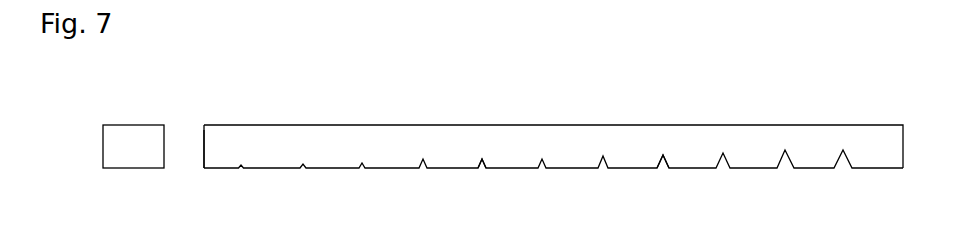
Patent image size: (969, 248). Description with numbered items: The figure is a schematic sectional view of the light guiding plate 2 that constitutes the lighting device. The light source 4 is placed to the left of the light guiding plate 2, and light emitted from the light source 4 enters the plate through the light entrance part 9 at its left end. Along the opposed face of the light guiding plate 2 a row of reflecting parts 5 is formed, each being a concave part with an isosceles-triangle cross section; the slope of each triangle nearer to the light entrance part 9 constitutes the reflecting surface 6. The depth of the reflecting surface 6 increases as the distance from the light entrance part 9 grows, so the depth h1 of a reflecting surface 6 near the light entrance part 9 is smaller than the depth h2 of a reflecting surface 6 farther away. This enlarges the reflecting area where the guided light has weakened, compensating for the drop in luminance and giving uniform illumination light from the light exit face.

The light guiding plate 2 is at (320, 126).
The light source 4 is at (124, 168).
The reflecting part 5 is at (487, 178).
The reflecting surface 6 is at (661, 157).
The light entrance part 9 is at (203, 150).
The depth of reflecting surface nearer to light entrance part h1 is at (376, 135).
The depth of reflecting surface farther from light entrance part h2 is at (803, 122).